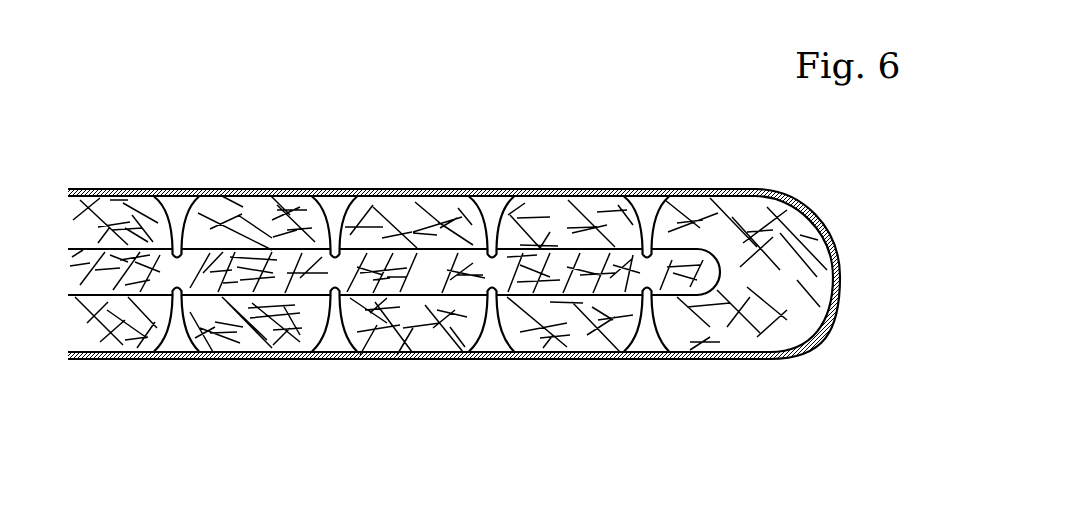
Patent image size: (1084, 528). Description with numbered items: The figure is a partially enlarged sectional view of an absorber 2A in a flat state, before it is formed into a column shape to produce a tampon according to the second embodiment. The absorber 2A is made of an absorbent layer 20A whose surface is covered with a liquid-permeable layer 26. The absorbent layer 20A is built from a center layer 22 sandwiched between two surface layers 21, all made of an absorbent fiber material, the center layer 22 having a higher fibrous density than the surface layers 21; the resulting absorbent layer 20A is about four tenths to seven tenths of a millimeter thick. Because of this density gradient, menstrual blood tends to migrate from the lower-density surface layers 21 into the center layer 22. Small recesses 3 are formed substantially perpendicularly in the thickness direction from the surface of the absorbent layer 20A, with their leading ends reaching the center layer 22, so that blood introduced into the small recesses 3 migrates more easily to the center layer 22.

The absorber 2A is at (600, 172).
The liquid-permeable layer 26 is at (426, 188).
The absorbent layer 20A is at (575, 424).
The surface layer 21 is at (546, 332).
The center layer 22 is at (426, 272).
The small recesses 3 is at (336, 196).